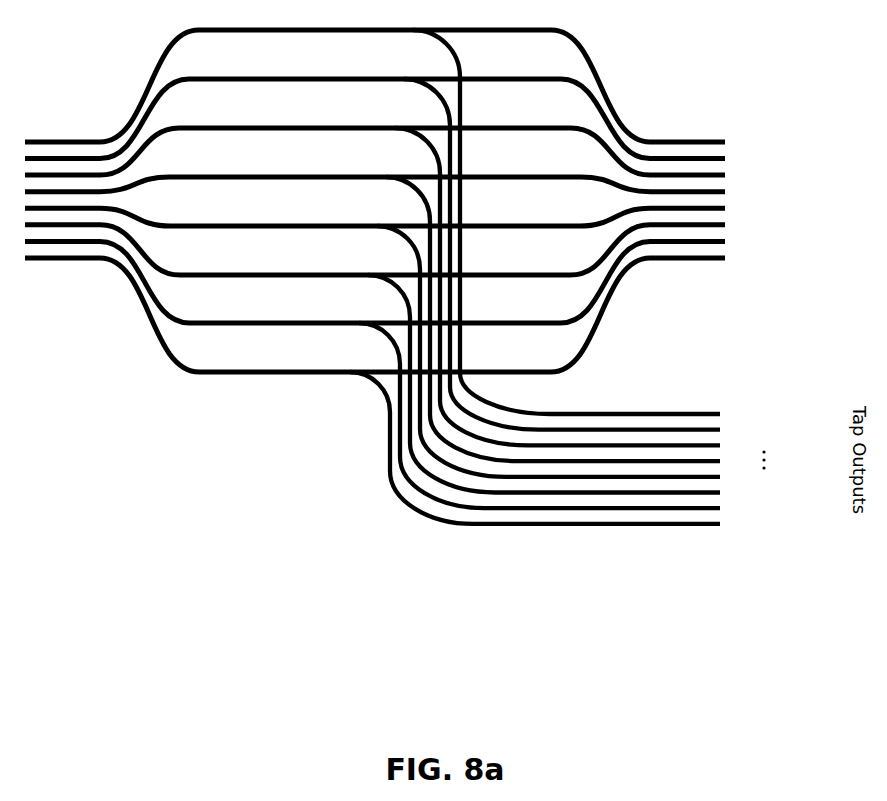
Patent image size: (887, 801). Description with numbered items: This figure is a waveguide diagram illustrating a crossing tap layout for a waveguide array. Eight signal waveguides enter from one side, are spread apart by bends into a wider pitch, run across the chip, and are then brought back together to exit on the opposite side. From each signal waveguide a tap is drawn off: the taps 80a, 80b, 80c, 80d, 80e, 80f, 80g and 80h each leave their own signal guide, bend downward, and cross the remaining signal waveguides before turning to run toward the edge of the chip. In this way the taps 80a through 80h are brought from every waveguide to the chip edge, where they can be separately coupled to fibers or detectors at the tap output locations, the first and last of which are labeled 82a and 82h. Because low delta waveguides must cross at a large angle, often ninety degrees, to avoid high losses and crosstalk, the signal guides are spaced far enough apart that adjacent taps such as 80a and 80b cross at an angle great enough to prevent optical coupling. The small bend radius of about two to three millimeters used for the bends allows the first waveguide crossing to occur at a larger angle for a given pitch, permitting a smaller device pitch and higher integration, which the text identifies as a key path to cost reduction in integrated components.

The tap 80a is at (433, 47).
The tap 80b is at (421, 92).
The tap 80c is at (407, 141).
The tap 80d is at (397, 191).
The tap 80e is at (392, 242).
The tap 80f is at (387, 296).
The tap 80g is at (368, 334).
The tap 80h is at (377, 402).
The location 82a is at (722, 414).
The location 82h is at (722, 525).